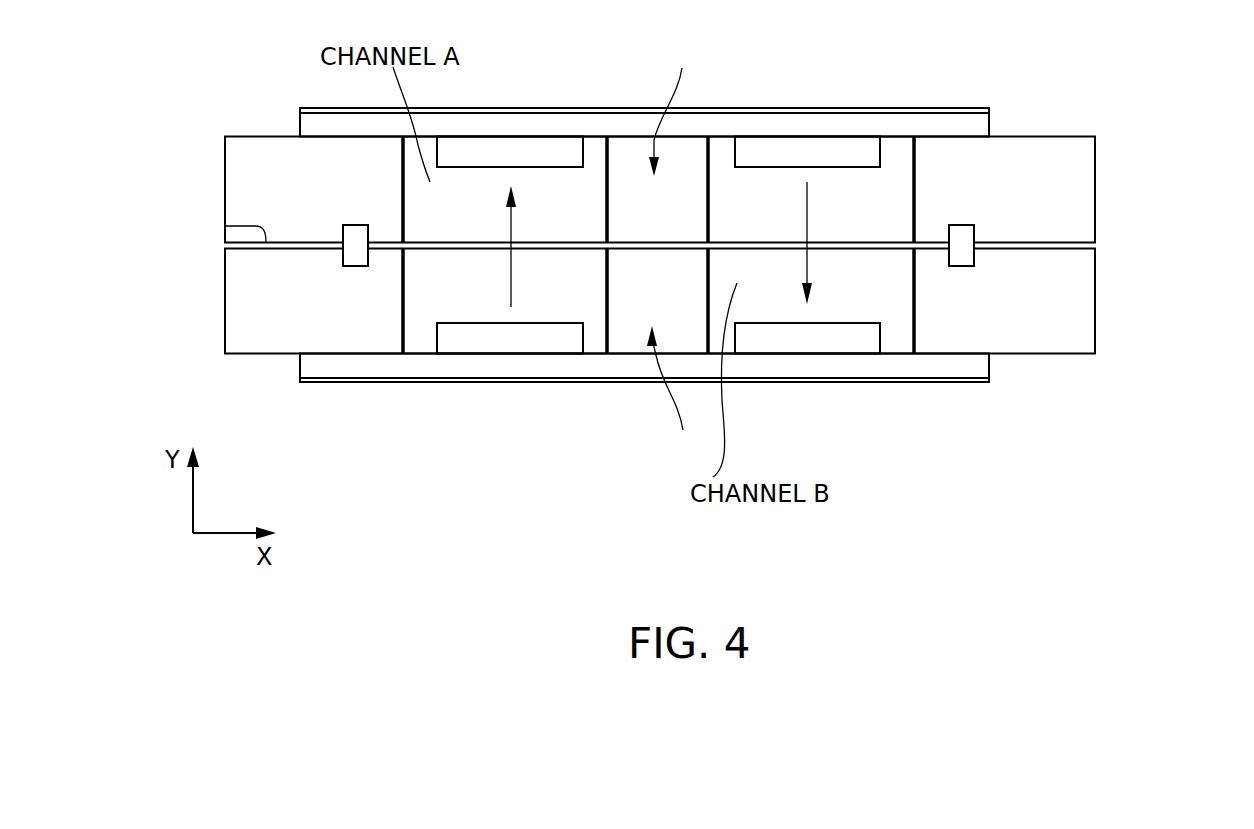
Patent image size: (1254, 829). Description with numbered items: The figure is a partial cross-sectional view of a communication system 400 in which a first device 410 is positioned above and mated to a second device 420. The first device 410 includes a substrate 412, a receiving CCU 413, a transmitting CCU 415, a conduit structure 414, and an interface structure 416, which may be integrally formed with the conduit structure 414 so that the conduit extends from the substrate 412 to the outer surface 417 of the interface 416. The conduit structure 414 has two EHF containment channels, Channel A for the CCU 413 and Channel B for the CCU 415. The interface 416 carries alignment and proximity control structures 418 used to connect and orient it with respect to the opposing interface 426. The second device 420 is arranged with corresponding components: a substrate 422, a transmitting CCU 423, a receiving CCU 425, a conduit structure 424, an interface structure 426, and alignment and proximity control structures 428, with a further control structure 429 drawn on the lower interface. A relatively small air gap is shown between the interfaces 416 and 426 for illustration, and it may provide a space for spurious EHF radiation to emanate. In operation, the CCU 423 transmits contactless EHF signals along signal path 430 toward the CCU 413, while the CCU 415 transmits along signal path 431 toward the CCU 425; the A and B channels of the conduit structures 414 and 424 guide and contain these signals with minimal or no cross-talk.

The communication system 400 is at (1055, 31).
The first device 410 is at (1175, 135).
The substrate 412 is at (800, 127).
The CCU (Rx) 413 is at (464, 148).
The conduit structure 414 is at (678, 113).
The CCU (Tx) 415 is at (855, 153).
The interface structure 416 is at (1095, 169).
The outer surface 417 is at (225, 226).
The alignment and proximity control structures 418 is at (343, 225).
The second device 420 is at (1175, 250).
The substrate 422 is at (760, 363).
The CCU (Tx) 423 is at (480, 347).
The conduit structure 424 is at (673, 392).
The CCU (Rx) 425 is at (837, 342).
The interface structure 426 is at (1095, 327).
The alignment and proximity control structures 428 is at (350, 263).
The lower connector contact 429 is at (974, 256).
The signal path 430 is at (511, 263).
The signal path 431 is at (805, 262).